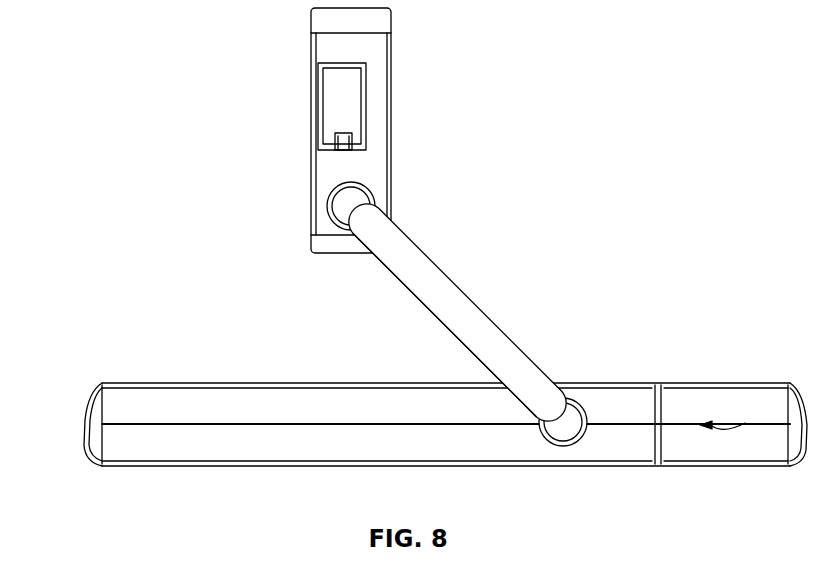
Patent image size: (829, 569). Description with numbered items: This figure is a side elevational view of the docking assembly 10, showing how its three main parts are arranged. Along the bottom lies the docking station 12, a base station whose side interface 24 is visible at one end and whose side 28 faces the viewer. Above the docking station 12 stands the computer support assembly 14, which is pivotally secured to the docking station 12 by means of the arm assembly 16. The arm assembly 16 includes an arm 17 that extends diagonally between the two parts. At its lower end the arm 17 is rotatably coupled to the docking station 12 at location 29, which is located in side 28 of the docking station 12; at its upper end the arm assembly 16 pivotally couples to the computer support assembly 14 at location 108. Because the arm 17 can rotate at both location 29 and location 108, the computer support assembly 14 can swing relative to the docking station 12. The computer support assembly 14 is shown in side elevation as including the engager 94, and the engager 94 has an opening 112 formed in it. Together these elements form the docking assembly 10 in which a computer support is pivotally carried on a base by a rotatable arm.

The docking assembly 10 is at (420, 257).
The docking station 12 is at (420, 415).
The computer support assembly 14 is at (361, 130).
The arm assembly 16 is at (457, 312).
The arm 17 is at (432, 310).
The side interface 24 is at (92, 393).
The side 28 is at (325, 450).
The location 29 is at (570, 440).
The engager 94 is at (320, 185).
The location 108 is at (373, 198).
The opening 112 is at (343, 102).